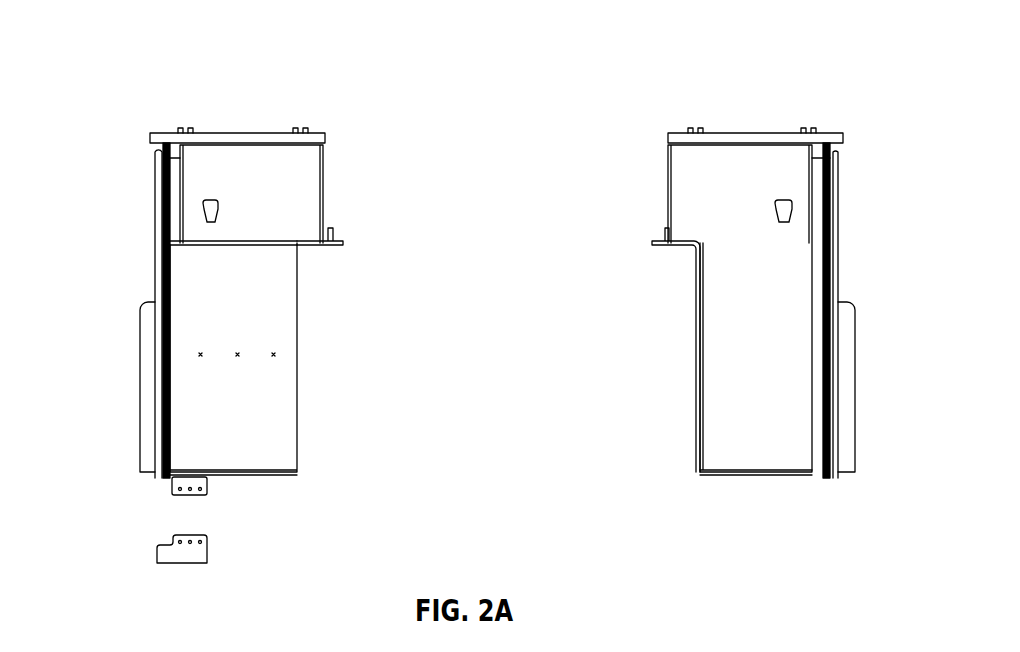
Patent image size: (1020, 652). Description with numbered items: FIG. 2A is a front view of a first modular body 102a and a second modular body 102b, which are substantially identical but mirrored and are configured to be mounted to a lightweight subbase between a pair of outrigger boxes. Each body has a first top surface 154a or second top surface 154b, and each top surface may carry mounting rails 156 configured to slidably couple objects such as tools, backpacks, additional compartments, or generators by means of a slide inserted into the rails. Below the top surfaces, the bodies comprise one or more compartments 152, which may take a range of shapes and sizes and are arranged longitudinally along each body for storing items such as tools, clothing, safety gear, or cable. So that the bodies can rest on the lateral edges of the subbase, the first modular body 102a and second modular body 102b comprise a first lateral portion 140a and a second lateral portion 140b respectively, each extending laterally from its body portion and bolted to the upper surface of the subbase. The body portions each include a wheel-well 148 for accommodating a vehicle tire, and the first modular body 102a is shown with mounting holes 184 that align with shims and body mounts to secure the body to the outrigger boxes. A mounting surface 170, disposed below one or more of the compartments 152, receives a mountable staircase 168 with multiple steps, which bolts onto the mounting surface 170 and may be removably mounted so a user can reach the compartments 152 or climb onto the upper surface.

The first modular body 102a is at (158, 105).
The second modular body 102b is at (835, 110).
The first top surface 154a is at (215, 131).
The second top surface 154b is at (783, 131).
The compartments 152 is at (270, 155).
The mounting rails 156 is at (305, 127).
The mounting holes 184 is at (273, 340).
The wheel-well 148 is at (140, 360).
The first lateral portion 140a is at (310, 215).
The second lateral portion 140b is at (687, 213).
The mounting surface 170 is at (207, 485).
The mountable staircase 168 is at (207, 550).